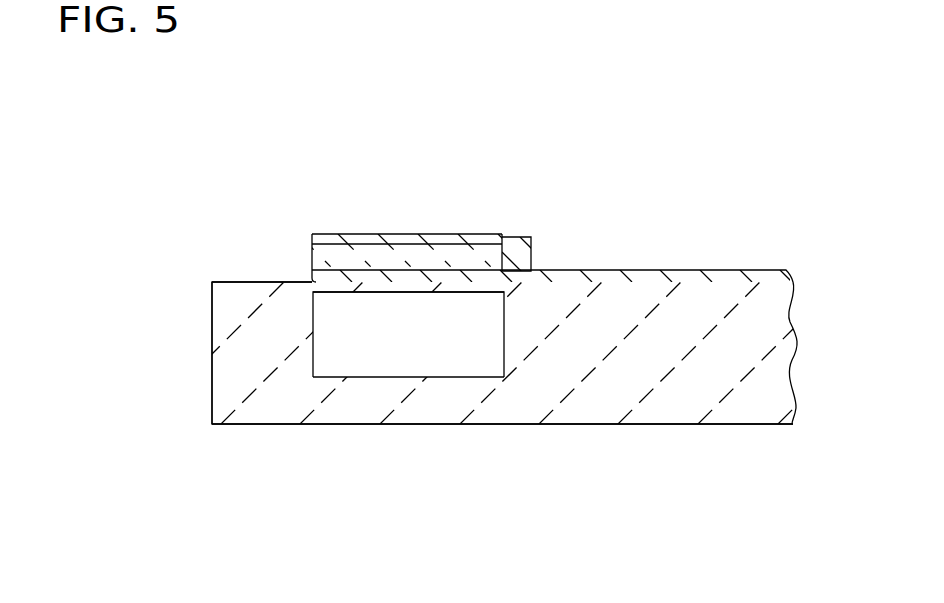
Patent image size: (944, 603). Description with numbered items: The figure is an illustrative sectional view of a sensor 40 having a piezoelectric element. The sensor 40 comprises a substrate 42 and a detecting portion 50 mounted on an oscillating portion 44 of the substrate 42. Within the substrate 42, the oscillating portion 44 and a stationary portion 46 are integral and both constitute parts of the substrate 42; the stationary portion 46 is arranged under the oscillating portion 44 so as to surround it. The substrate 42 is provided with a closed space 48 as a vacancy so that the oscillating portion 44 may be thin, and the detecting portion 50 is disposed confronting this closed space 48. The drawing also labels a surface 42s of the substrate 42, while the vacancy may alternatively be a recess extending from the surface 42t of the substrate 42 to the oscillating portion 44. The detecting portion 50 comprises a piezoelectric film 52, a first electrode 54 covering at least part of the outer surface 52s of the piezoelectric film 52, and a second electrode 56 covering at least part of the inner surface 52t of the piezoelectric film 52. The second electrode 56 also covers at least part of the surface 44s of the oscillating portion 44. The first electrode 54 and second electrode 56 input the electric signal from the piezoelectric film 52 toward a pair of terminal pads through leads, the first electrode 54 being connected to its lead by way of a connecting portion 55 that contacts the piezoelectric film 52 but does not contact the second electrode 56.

The sensor 40 is at (498, 407).
The substrate 42 is at (293, 413).
The substrate top surface 42s is at (227, 282).
The surface of the substrate 42t is at (330, 426).
The oscillating portion 44 is at (403, 292).
The surface of the oscillating portion 44s is at (452, 293).
The stationary portion 46 is at (233, 355).
The closed space 48 is at (477, 362).
The detecting portion 50 is at (455, 219).
The piezoelectric film 52 is at (323, 260).
The outer surface of the piezoelectric film 52s is at (341, 240).
The inner surface of the piezoelectric film 52t is at (338, 270).
The first electrode 54 is at (497, 242).
The connecting portion 55 is at (523, 253).
The second electrode 56 is at (637, 271).